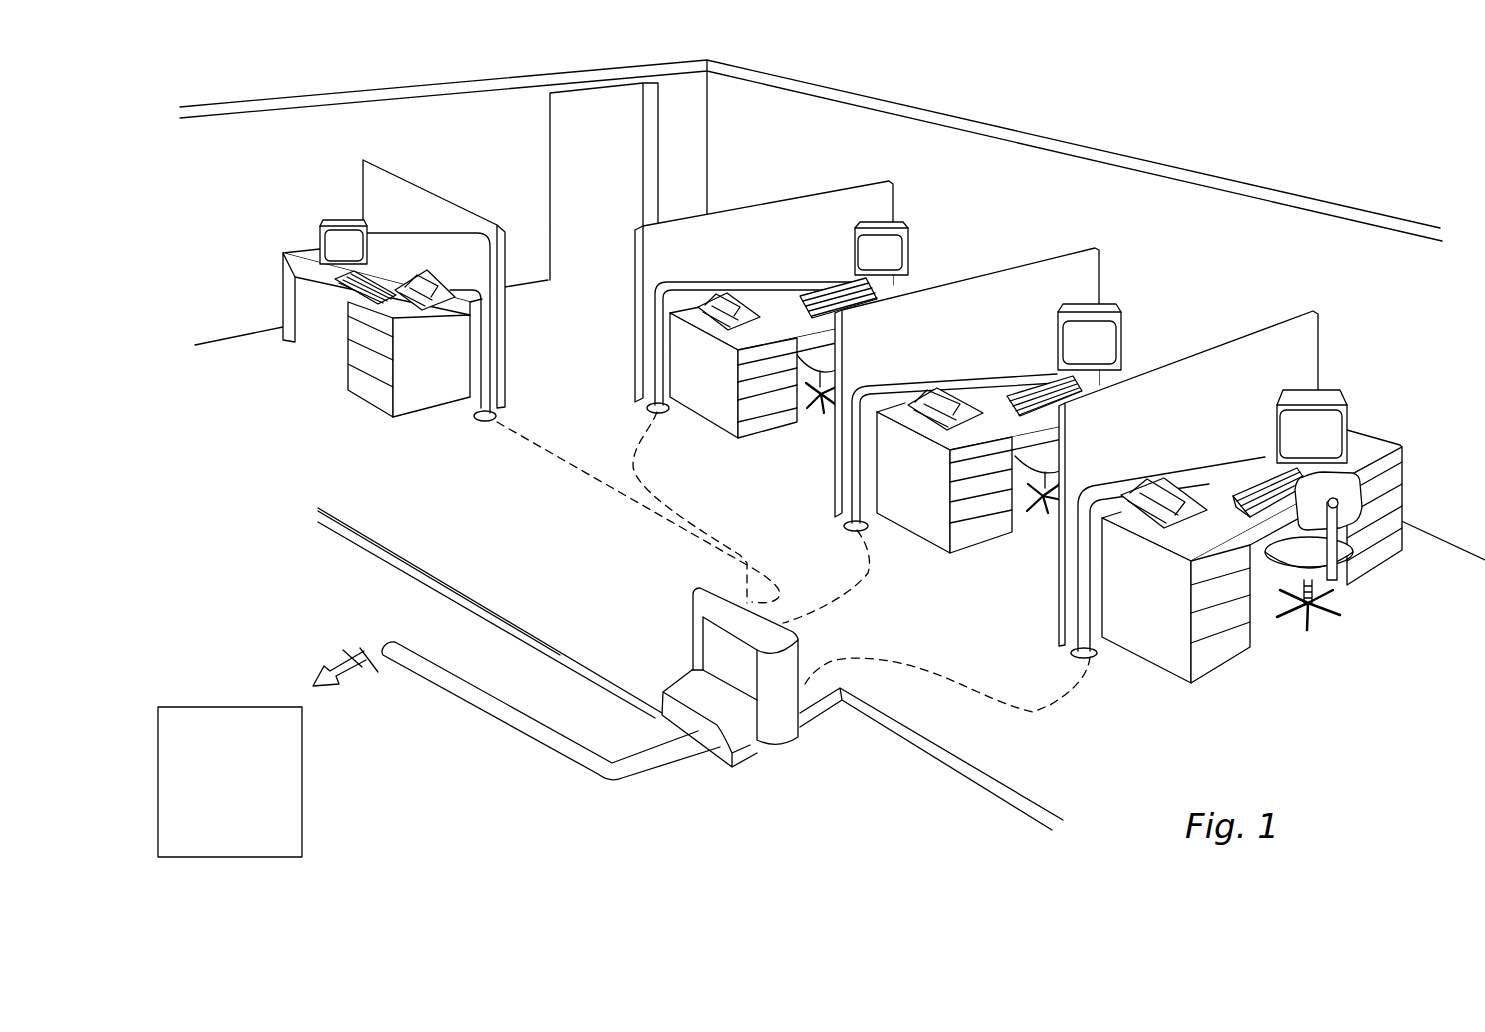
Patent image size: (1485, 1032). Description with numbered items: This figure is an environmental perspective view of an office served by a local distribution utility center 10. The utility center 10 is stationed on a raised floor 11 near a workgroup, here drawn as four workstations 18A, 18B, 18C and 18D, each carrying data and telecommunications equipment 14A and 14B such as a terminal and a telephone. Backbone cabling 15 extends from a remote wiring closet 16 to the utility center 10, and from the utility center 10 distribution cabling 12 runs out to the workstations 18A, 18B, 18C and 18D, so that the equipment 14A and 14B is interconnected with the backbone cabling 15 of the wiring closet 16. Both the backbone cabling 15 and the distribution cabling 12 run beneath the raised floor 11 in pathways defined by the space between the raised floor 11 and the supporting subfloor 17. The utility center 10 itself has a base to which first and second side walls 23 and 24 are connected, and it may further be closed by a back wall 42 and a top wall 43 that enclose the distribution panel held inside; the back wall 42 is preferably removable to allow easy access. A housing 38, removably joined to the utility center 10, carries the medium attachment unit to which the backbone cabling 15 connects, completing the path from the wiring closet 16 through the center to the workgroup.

The utility center 10 is at (672, 593).
The raised floor 11 is at (424, 518).
The distribution cabling 12 is at (698, 476).
The data and telecommunications equipment 14A is at (343, 221).
The data and telecommunications equipment 14B is at (427, 272).
The backbone cabling 15 is at (575, 754).
The remote wiring closet 16 is at (218, 806).
The supporting subfloor 17 is at (370, 557).
The workstation 18A is at (450, 179).
The workstation 18B is at (844, 182).
The workstation 18C is at (1063, 232).
The workstation 18D is at (1270, 322).
The first side wall 23 is at (697, 650).
The second side wall 24 is at (774, 698).
The housing 38 is at (707, 733).
The back wall 42 is at (721, 664).
The top wall 43 is at (735, 628).